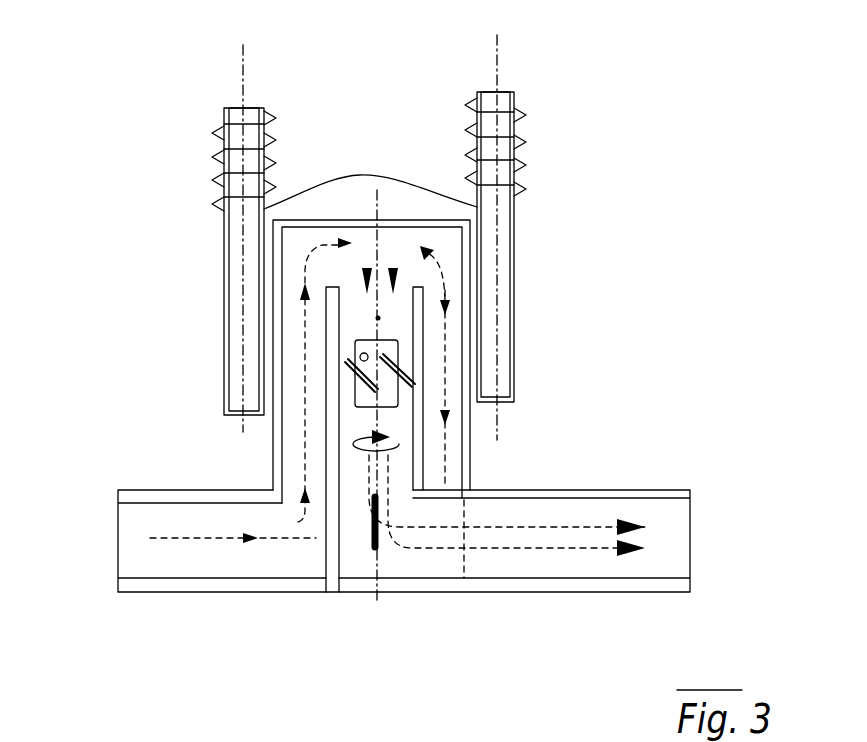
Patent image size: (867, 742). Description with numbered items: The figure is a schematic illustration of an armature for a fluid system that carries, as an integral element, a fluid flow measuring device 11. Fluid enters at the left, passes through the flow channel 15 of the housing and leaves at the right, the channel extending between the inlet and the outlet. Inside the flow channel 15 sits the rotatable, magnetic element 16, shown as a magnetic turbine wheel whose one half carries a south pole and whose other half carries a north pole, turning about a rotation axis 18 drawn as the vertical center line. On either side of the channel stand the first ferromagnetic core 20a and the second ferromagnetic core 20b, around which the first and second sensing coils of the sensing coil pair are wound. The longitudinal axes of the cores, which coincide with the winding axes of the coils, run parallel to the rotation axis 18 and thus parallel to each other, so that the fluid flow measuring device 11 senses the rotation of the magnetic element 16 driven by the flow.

The fluid flow measuring device 11 is at (538, 173).
The flow channel 15 is at (140, 565).
The rotatable, magnetic element 16 is at (367, 357).
The rotation axis 18 is at (378, 318).
The first ferromagnetic core 20a is at (237, 298).
The second ferromagnetic core 20b is at (510, 344).